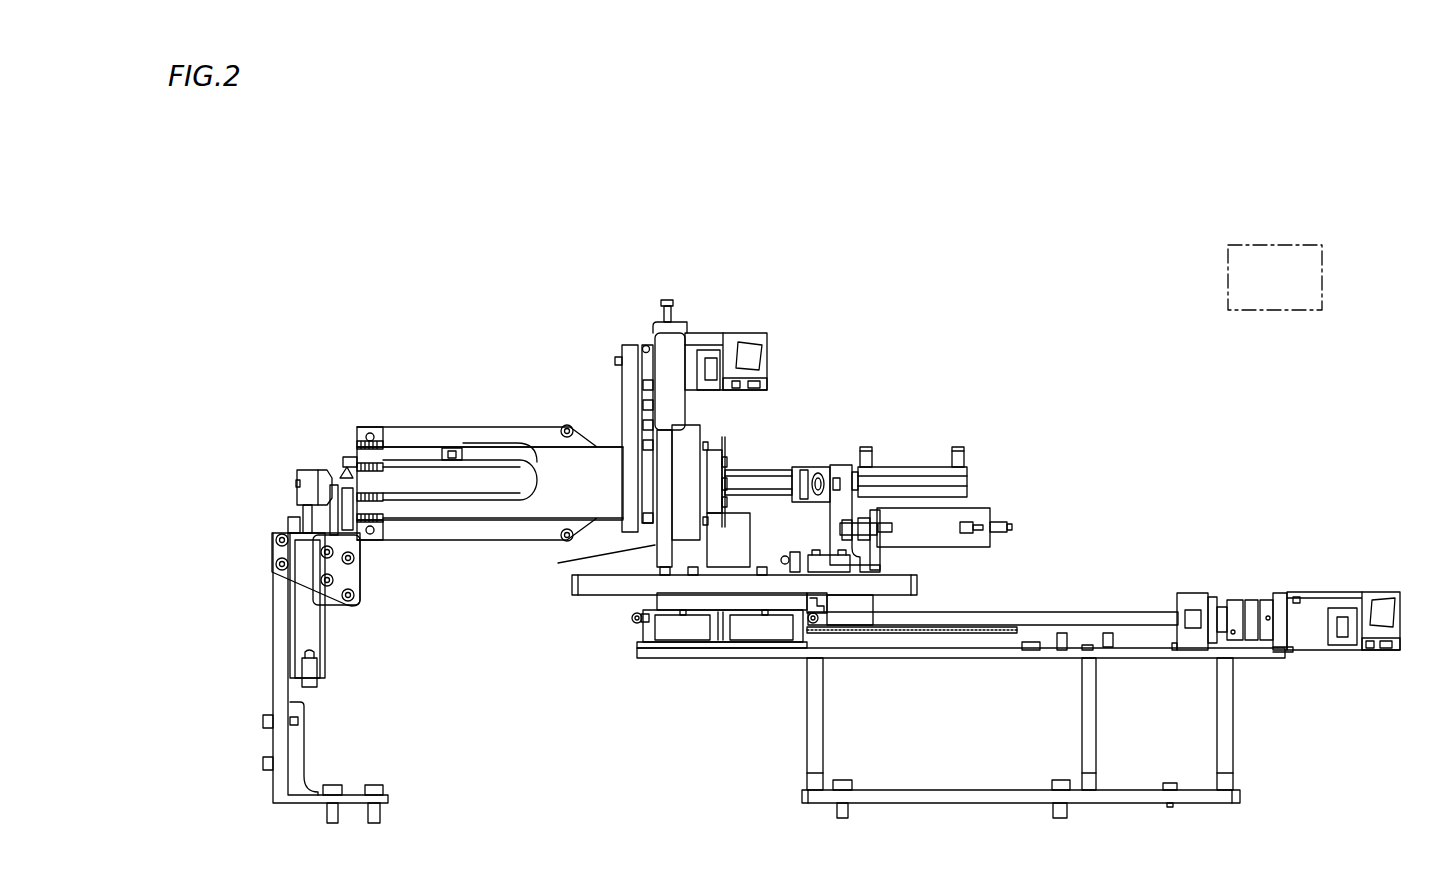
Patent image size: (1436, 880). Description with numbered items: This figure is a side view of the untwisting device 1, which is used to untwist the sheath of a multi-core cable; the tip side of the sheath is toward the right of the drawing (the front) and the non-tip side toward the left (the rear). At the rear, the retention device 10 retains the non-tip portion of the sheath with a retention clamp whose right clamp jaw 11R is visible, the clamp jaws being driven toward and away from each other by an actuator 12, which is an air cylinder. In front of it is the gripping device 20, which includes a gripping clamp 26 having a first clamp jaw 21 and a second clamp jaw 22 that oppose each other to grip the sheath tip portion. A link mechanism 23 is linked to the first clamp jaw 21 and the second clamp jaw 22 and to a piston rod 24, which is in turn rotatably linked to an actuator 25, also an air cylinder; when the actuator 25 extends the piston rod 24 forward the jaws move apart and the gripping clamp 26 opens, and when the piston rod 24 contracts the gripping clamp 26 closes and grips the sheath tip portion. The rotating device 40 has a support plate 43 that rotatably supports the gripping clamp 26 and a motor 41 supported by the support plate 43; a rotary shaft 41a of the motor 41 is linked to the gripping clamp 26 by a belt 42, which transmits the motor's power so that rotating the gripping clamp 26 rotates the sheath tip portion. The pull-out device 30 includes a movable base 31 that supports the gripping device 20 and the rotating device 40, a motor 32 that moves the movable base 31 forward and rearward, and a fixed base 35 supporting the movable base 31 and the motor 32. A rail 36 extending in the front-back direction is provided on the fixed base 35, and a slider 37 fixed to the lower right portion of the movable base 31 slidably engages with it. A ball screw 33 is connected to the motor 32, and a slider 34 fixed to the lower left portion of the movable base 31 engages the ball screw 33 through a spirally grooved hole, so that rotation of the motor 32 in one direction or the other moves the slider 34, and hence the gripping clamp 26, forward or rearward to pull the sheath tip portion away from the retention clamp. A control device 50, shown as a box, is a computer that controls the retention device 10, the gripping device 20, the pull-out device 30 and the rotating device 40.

The untwisting device 1 is at (1050, 230).
The retention device 10 is at (296, 450).
The clamp jaw 11R is at (299, 498).
The actuator 12 is at (302, 641).
The gripping device 20 is at (462, 310).
The first clamp jaw 21 is at (393, 447).
The second clamp jaw 22 is at (340, 470).
The link mechanism 23 is at (548, 524).
The piston rod 24 is at (779, 477).
The actuator 25 is at (913, 467).
The gripping clamp 26 is at (457, 423).
The pull-out device 30 is at (1222, 510).
The movable base 31 is at (612, 592).
The motor 32 is at (1318, 592).
The ball screw 33 is at (1060, 610).
The slider 34 is at (850, 622).
The fixed base 35 is at (1003, 665).
The rail 36 is at (932, 640).
The slider 37 is at (700, 645).
The rotating device 40 is at (678, 282).
The motor 41 is at (733, 345).
The rotary shaft 41a is at (608, 358).
The belt 42 is at (625, 402).
The support plate 43 is at (640, 548).
The control device 50 is at (1305, 245).